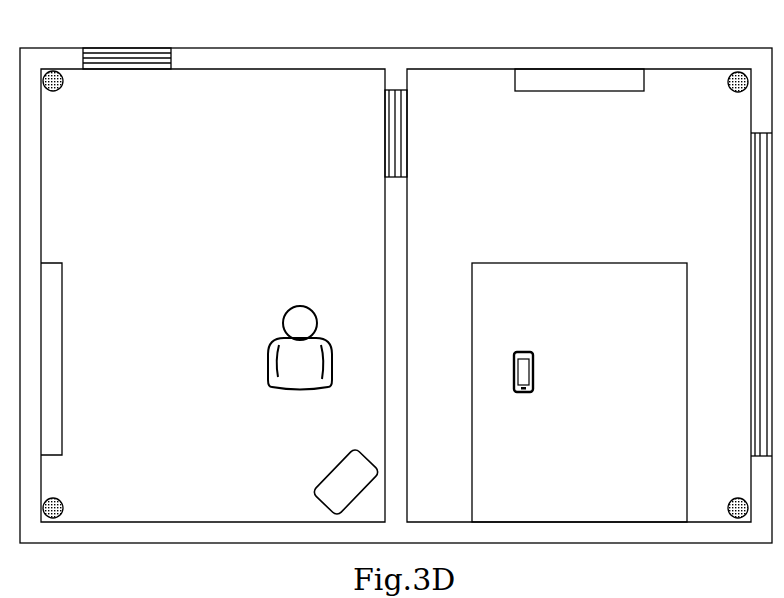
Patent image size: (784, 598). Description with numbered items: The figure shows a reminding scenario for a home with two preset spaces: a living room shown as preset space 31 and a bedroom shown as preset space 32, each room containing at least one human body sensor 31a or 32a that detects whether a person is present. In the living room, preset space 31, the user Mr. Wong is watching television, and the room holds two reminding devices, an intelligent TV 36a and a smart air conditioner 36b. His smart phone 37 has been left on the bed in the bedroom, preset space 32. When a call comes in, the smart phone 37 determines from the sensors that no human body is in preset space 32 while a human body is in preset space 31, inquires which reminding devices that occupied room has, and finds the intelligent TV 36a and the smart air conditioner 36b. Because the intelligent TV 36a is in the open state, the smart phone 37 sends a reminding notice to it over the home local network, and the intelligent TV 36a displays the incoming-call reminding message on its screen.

The preset space 31 is at (262, 66).
The preset space 32 is at (482, 66).
The human body sensor 31a is at (66, 92).
The sensors in second room 32a is at (727, 91).
The intelligent TV 36a is at (65, 260).
The smart air conditioner 36b is at (329, 460).
The smart phone 37 is at (531, 349).